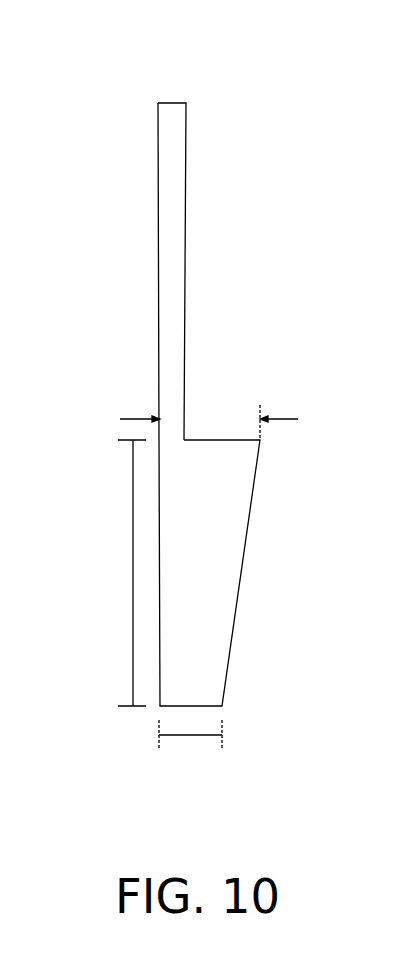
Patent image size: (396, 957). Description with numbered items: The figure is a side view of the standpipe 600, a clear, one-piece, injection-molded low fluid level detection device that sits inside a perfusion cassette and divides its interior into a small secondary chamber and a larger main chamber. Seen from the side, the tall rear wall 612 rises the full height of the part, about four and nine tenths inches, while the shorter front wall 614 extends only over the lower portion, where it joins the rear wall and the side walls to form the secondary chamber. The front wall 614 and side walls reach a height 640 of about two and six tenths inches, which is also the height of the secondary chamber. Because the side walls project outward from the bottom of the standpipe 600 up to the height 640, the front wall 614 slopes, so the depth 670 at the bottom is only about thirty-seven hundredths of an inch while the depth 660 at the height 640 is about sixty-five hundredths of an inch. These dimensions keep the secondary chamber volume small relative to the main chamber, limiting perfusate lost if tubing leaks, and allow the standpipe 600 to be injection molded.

The standpipe 600 is at (253, 356).
The rear wall 612 is at (185, 203).
The front wall 614 is at (241, 575).
The height 640 is at (132, 577).
The depth 660 is at (283, 419).
The depth 670 is at (187, 735).